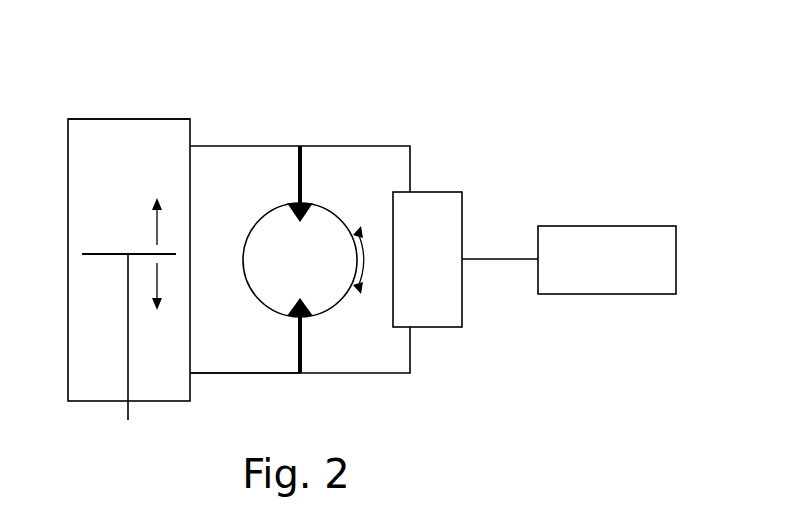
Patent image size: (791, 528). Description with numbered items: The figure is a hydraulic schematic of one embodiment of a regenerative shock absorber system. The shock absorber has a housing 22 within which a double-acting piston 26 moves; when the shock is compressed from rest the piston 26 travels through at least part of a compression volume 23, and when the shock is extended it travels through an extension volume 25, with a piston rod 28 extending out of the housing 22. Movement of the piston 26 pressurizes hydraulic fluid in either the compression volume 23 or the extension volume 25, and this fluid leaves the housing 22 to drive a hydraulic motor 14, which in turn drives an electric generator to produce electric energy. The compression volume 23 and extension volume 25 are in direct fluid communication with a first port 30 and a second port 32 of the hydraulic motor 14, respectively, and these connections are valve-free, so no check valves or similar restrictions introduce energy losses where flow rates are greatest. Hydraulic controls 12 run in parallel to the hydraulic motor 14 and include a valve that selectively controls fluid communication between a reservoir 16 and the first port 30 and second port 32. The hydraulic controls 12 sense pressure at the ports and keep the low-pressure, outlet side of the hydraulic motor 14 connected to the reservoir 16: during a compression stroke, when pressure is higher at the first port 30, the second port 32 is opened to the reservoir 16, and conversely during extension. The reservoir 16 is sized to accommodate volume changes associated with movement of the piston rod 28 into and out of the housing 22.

The hydraulic controls 12 is at (450, 190).
The hydraulic motor 14 is at (258, 221).
The reservoir 16 is at (604, 295).
The housing 22 is at (68, 290).
The compression volume 23 is at (100, 119).
The extension volume 25 is at (178, 382).
The piston 26 is at (92, 253).
The piston rod 28 is at (128, 338).
The first port 30 is at (303, 202).
The second port 32 is at (302, 318).